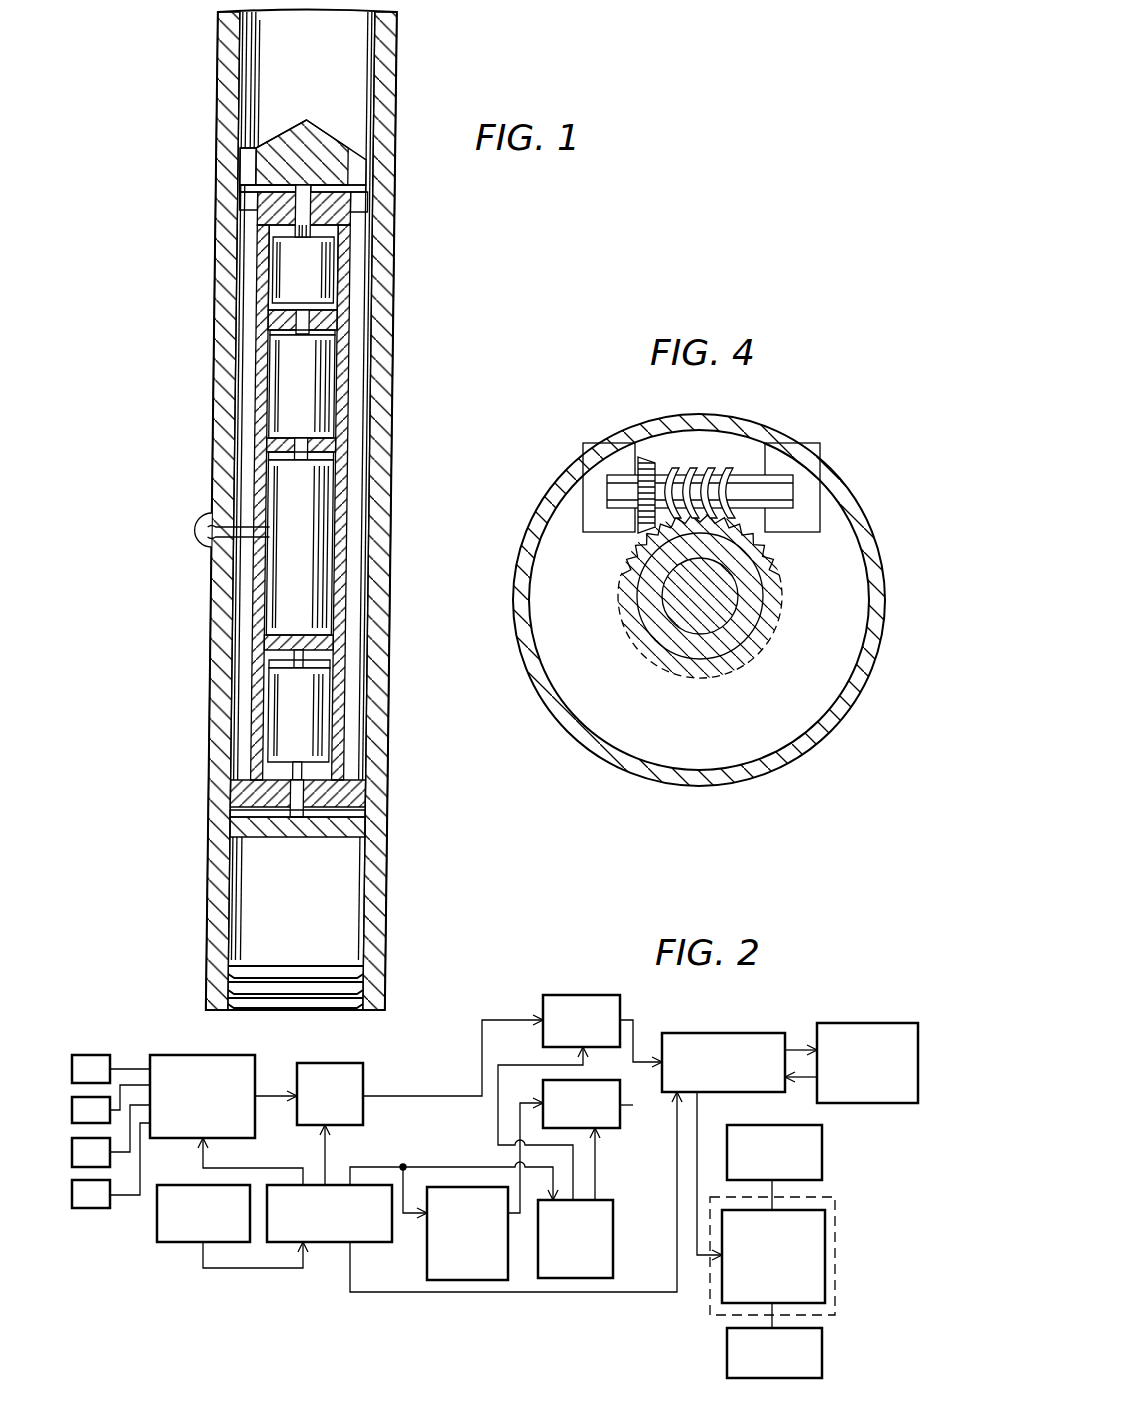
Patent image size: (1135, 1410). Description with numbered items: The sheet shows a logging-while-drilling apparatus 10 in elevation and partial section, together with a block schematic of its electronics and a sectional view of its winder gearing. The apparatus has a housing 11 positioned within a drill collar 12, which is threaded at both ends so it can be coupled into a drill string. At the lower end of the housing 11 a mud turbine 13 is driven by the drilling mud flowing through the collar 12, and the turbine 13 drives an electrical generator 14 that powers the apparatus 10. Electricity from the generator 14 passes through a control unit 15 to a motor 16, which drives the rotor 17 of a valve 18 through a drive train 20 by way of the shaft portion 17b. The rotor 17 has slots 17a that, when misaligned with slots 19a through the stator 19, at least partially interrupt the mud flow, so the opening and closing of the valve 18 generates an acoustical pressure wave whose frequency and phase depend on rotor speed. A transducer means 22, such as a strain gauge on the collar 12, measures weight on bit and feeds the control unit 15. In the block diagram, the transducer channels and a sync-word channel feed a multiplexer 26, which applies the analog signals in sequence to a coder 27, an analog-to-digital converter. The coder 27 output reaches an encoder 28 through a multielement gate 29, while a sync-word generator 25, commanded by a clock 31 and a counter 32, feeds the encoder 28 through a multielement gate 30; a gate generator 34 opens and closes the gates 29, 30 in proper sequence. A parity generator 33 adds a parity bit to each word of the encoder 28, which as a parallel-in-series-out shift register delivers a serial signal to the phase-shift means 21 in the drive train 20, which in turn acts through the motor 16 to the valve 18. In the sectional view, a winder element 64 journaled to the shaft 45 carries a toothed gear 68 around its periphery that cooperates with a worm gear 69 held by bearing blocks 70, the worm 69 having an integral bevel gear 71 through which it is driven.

In FIG. 1, the logging-while-drilling apparatus 10 is at (360, 343).
In FIG. 1, the housing 11 is at (341, 642).
In FIG. 1, the drill collar 12 is at (389, 97).
In FIG. 1, the mud turbine 13 is at (377, 815).
In FIG. 1, the electrical generator 14 is at (288, 685).
In FIG. 1, the control unit 15 is at (274, 500).
In FIG. 1, the motor 16 is at (273, 408).
In FIG. 2, the motor 16 is at (774, 1152).
In FIG. 1, the rotor 17 is at (320, 127).
In FIG. 1, the rotor slots 17a is at (254, 165).
In FIG. 1, the valve shaft 17b is at (313, 232).
In FIG. 1, the valve 18 is at (378, 188).
In FIG. 2, the valve 18 is at (774, 1353).
In FIG. 1, the stator 19 is at (265, 215).
In FIG. 1, the stator slots 19a is at (364, 207).
In FIG. 1, the drive train 20 is at (291, 273).
In FIG. 2, the drive train 20 is at (838, 1262).
In FIG. 2, the phase-shift means 21 is at (773, 1256).
In FIG. 1, the transducer means 22 is at (214, 547).
In FIG. 2, the transducer means 22 is at (72, 1112).
In FIG. 2, the sync-word generator 25 is at (467, 1233).
In FIG. 2, the multiplexer 26 is at (190, 1130).
In FIG. 2, the coder 27 is at (330, 1094).
In FIG. 2, the encoder 28 is at (723, 1062).
In FIG. 2, the multielement gate 29 is at (581, 1021).
In FIG. 2, the multielement gate 30 is at (581, 1104).
In FIG. 2, the clock 31 is at (203, 1213).
In FIG. 2, the counter 32 is at (329, 1213).
In FIG. 2, the parity generator 33 is at (867, 1063).
In FIG. 2, the gate generator 34 is at (575, 1239).
In FIG. 4, the shaft 45 is at (728, 608).
In FIG. 4, the winder element 64 is at (645, 565).
In FIG. 4, the toothed gear 68 is at (691, 596).
In FIG. 4, the worm gear 69 is at (750, 472).
In FIG. 4, the bearing blocks 70 is at (585, 532).
In FIG. 4, the bevel gear 71 is at (652, 470).